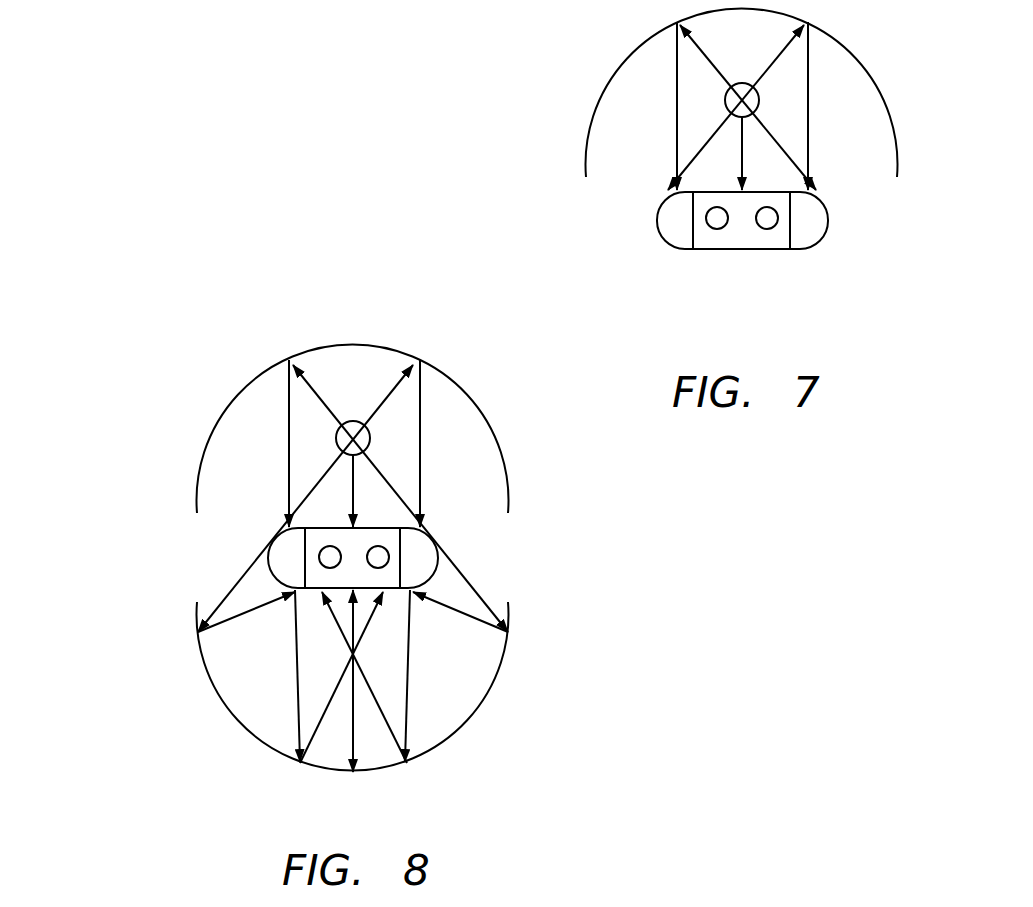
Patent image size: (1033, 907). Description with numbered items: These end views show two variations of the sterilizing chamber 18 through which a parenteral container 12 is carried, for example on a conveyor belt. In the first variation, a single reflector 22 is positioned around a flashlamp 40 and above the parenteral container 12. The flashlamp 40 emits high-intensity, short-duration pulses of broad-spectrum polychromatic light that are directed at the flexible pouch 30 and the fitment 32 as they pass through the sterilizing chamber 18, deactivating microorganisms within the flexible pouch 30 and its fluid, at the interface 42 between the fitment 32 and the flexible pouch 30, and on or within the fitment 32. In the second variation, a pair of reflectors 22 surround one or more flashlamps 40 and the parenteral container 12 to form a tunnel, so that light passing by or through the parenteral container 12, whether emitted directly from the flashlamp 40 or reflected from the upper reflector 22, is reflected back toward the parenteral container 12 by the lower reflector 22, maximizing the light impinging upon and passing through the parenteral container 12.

In FIG. 7, the parenteral container 12 is at (640, 228).
In FIG. 8, the parenteral container 12 is at (243, 556).
In FIG. 7, the sterilizing chamber 18 is at (555, 257).
In FIG. 8, the sterilizing chamber 18 is at (163, 595).
In FIG. 7, the reflector 22 is at (865, 62).
In FIG. 8, the reflector 22 is at (206, 444).
In FIG. 7, the flexible pouch 30 is at (665, 246).
In FIG. 8, the flexible pouch 30 is at (276, 583).
In FIG. 7, the fitment 32 is at (706, 250).
In FIG. 8, the fitment 32 is at (332, 527).
In FIG. 7, the flashlamp 40 is at (742, 83).
In FIG. 8, the flashlamp 40 is at (353, 421).
In FIG. 7, the interface 42 is at (752, 245).
In FIG. 8, the interface 42 is at (340, 586).